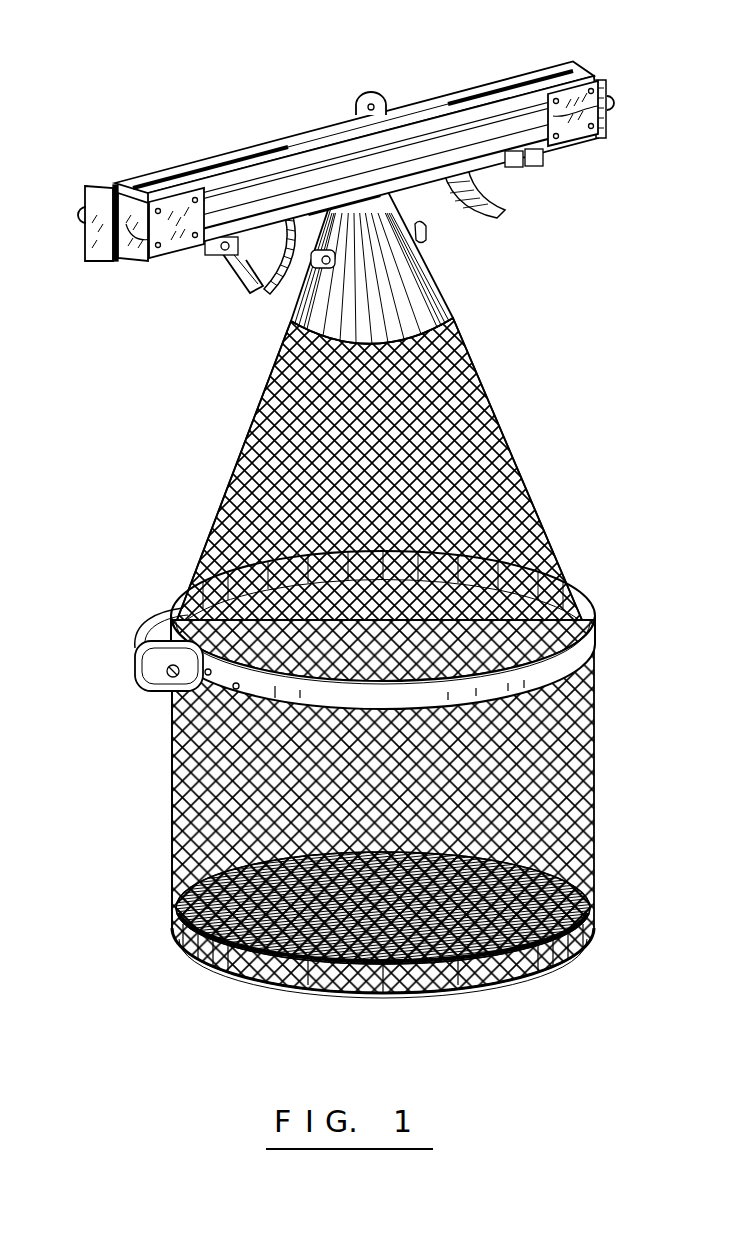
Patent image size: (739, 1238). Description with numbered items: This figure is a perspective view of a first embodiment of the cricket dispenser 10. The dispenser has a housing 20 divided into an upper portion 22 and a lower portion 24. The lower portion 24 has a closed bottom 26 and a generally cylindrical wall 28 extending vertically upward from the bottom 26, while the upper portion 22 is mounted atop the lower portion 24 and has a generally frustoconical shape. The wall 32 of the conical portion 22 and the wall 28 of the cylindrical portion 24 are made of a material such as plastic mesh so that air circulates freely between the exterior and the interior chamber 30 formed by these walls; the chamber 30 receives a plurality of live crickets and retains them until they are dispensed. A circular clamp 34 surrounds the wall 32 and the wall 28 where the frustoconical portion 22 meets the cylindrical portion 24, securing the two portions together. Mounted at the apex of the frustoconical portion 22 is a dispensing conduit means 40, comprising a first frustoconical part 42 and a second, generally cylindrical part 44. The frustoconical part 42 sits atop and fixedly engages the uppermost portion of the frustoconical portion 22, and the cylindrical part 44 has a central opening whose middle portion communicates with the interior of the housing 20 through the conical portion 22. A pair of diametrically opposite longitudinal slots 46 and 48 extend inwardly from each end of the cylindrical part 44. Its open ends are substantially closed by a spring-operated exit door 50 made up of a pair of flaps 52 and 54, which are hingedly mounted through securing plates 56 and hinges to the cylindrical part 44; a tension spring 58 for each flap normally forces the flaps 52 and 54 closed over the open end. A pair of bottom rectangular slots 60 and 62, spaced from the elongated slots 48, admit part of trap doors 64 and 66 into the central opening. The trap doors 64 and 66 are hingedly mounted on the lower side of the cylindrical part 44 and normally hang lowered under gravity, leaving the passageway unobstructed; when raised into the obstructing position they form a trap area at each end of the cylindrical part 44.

The cricket dispenser 10 is at (326, 100).
The housing 20 is at (241, 414).
The upper portion 22 is at (495, 443).
The lower portion 24 is at (574, 790).
The closed bottom 26 is at (581, 895).
The cylindrical wall 28 is at (579, 835).
The interior chamber 30 is at (190, 845).
The wall of conical portion 32 is at (207, 493).
The circular clamp 34 is at (586, 628).
The dispensing conduit means 40 is at (443, 268).
The first frustoconical part 42 is at (437, 300).
The second cylindrical part 44 is at (276, 128).
The longitudinal slot 46 is at (147, 168).
The longitudinal slot 48 is at (102, 252).
The spring-operated exit door 50 is at (92, 196).
The flap 52 is at (85, 238).
The flap 54 is at (122, 240).
The securing plate 56 is at (165, 240).
The tension spring 58 is at (611, 90).
The bottom rectangular slot 60 is at (279, 247).
The bottom rectangular slot 62 is at (458, 147).
The trap door 64 is at (237, 253).
The trap door 66 is at (490, 173).